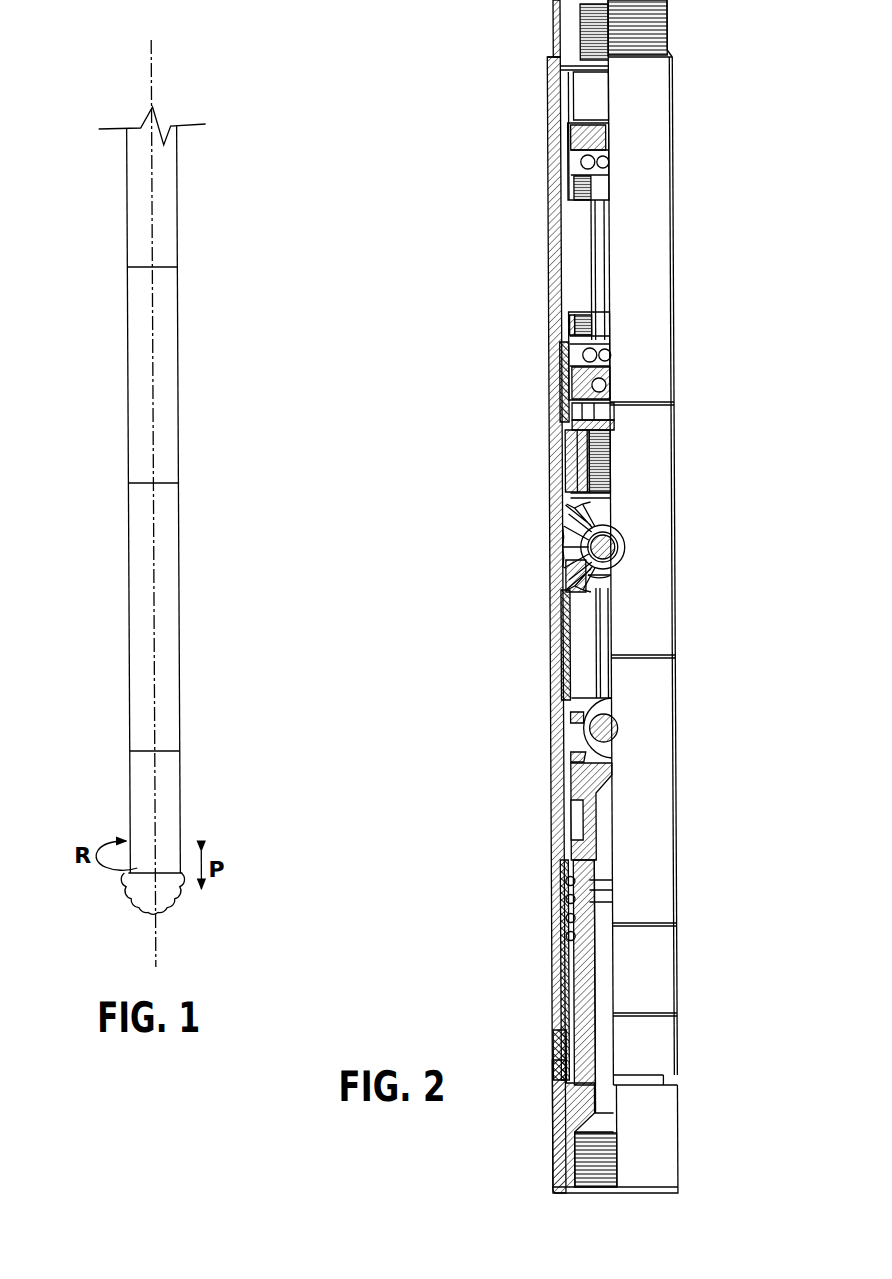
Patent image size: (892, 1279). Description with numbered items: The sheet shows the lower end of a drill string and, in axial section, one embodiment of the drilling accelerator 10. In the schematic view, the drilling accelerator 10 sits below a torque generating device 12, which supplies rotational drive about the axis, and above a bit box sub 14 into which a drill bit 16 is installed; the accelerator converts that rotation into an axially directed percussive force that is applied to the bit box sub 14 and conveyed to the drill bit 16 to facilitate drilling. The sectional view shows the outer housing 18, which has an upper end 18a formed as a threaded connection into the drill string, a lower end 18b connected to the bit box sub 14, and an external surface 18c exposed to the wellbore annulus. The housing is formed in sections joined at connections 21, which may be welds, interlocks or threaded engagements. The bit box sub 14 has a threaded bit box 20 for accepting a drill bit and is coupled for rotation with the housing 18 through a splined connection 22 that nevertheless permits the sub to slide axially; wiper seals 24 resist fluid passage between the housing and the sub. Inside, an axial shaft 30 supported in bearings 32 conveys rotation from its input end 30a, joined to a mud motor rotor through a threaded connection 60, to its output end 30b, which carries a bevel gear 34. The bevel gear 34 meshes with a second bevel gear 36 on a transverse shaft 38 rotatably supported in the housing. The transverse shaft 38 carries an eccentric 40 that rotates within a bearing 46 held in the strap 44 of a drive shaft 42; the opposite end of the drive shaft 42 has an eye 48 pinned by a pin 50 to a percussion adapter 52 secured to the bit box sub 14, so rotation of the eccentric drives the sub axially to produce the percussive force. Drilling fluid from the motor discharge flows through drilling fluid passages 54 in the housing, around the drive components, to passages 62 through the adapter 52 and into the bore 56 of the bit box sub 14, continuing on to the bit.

In FIG. 1, the drilling accelerator 10 is at (166, 640).
In FIG. 2, the drilling accelerator 10 is at (545, 348).
In FIG. 1, the torque generating device 12 is at (167, 383).
In FIG. 1, the bit box sub 14 is at (165, 812).
In FIG. 2, the bit box sub 14 is at (560, 1100).
In FIG. 1, the drill bit 16 is at (142, 884).
In FIG. 2, the outer housing 18 is at (540, 150).
In FIG. 2, the upper end 18a is at (664, 46).
In FIG. 2, the lower end 18b is at (662, 1072).
In FIG. 2, the external surface 18c is at (675, 802).
In FIG. 2, the threaded bit box 20 is at (570, 1175).
In FIG. 2, the connections 21 is at (553, 380).
In FIG. 2, the splined connection 22 is at (551, 930).
In FIG. 2, the wiper seals 24 is at (550, 1064).
In FIG. 2, the axial shaft 30 is at (604, 261).
In FIG. 2, the input end 30a is at (600, 105).
In FIG. 2, the output end 30b is at (596, 492).
In FIG. 2, the bearings 32 is at (563, 440).
In FIG. 2, the bevel gear 34 is at (566, 500).
In FIG. 2, the second bevel gear 36 is at (560, 545).
In FIG. 2, the transverse shaft 38 is at (605, 548).
In FIG. 2, the eccentric 40 is at (600, 527).
In FIG. 2, the drive shaft 42 is at (605, 668).
In FIG. 2, the strap 44 is at (605, 575).
In FIG. 2, the bearing 46 is at (575, 570).
In FIG. 2, the eye 48 is at (605, 755).
In FIG. 2, the pin 50 is at (608, 715).
In FIG. 2, the percussion adapter 52 is at (568, 748).
In FIG. 2, the drilling fluid passages 54 is at (553, 685).
In FIG. 2, the bore 56 is at (604, 957).
In FIG. 2, the threaded connection 60 is at (585, 42).
In FIG. 2, the passages 62 is at (602, 815).